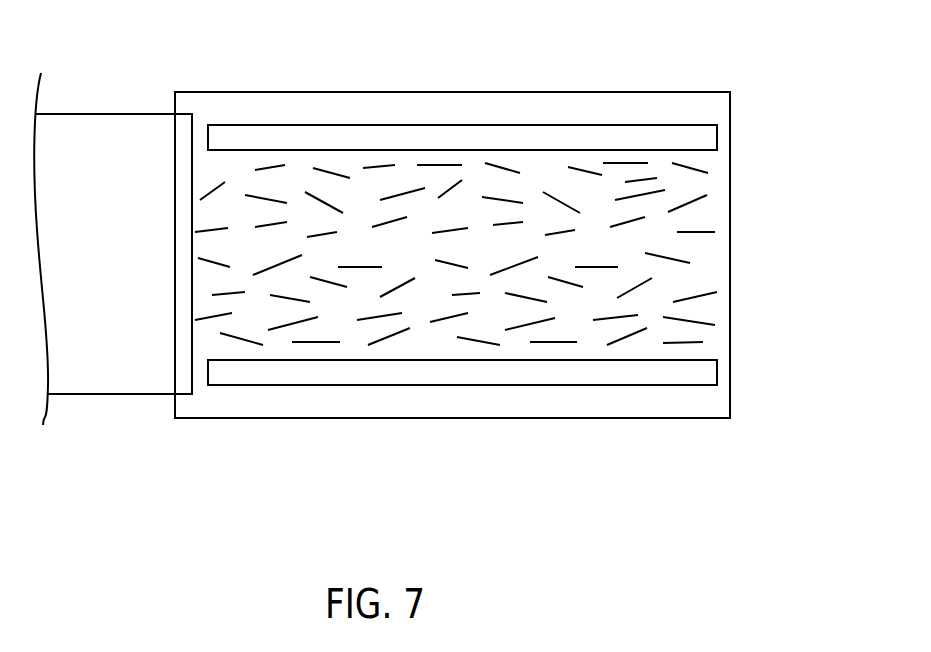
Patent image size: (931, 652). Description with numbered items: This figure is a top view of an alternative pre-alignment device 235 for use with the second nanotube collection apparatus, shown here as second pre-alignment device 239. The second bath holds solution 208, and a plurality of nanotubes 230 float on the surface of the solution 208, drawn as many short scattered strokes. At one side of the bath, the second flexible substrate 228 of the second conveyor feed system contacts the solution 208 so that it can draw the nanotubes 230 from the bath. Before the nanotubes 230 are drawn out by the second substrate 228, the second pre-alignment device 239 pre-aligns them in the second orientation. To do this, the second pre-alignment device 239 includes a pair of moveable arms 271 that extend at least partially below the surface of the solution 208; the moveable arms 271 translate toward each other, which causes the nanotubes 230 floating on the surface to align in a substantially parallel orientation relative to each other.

The solution 208 is at (607, 105).
The second flexible substrate 228 is at (114, 130).
The nanotubes 230 is at (273, 198).
The pre-alignment device 235 is at (713, 107).
The second pre-alignment device 239 is at (692, 124).
The moveable arms 271 is at (710, 150).